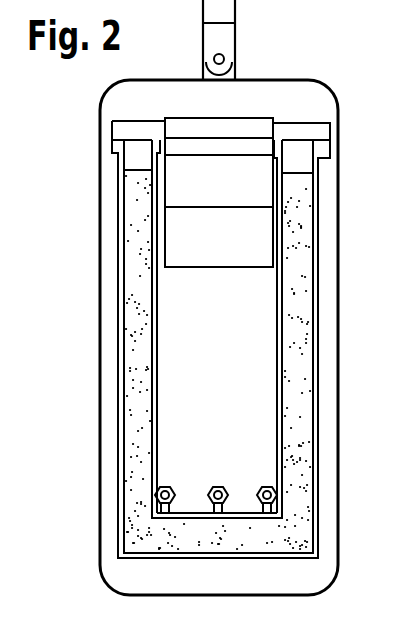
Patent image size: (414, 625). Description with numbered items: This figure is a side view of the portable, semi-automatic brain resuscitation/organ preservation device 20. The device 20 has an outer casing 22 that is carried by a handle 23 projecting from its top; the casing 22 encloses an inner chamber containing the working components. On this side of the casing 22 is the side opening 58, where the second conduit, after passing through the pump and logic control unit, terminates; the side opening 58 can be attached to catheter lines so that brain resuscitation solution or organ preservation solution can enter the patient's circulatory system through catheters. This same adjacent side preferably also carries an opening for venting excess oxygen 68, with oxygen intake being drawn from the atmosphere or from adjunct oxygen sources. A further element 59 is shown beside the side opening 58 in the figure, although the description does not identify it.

The brain resuscitation/organ preservation device 20 is at (78, 119).
The outer casing 22 is at (340, 117).
The handle 23 is at (236, 35).
The side opening 58 is at (218, 507).
The terminal nut 59 is at (160, 512).
The opening for venting excess oxygen 68 is at (272, 513).